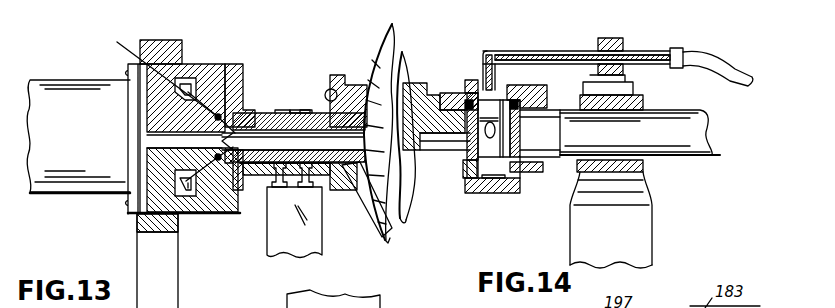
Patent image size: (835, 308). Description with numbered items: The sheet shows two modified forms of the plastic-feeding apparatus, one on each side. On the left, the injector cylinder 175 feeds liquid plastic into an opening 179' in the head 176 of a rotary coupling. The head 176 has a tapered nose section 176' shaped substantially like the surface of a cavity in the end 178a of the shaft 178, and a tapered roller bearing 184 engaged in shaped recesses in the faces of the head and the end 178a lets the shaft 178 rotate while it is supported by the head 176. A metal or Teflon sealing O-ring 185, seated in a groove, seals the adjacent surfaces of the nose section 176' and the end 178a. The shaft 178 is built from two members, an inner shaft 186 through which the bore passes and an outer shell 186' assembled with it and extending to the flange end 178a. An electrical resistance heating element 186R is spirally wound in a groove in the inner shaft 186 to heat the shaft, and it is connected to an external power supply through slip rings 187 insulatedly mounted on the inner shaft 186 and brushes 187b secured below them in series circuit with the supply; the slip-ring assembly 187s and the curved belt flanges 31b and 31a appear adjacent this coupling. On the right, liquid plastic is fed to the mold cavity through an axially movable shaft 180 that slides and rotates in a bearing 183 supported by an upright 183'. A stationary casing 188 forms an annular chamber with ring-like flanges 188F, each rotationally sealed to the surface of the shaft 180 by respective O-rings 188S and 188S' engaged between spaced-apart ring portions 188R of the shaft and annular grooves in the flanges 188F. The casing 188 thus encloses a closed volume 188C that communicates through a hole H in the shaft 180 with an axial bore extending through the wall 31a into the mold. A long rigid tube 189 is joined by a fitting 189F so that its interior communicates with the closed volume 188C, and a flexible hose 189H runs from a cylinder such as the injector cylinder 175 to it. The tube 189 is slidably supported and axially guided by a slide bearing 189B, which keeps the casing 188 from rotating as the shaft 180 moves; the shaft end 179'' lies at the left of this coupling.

In FIG. 13, the injector cylinder 175 is at (93, 127).
In FIG. 13, the head 176 is at (189, 115).
In FIG. 13, the tapered nose section 176' is at (154, 71).
In FIG. 13, the tapered roller bearing 184 is at (183, 78).
In FIG. 13, the end of shaft 178a is at (233, 107).
In FIG. 13, the sealing O-ring 185 is at (236, 113).
In FIG. 13, the opening 179' is at (276, 189).
In FIG. 13, the slip rings 187 is at (302, 107).
In FIG. 13, the shaft 178 is at (296, 108).
In FIG. 13, the outer shell 186' is at (280, 202).
In FIG. 13, the brushes 187b is at (313, 188).
In FIG. 13, the window plate 187s is at (270, 256).
In FIG. 13, the inner shaft 186 is at (344, 201).
In FIG. 13, the electrical resistance heating element 186R is at (362, 217).
In FIG. 13, the belt flange 31b is at (393, 26).
In FIG. 13, the wall 31a is at (404, 53).
In FIG. 14, the shaft end 179'' is at (446, 196).
In FIG. 14, the hole H is at (467, 81).
In FIG. 14, the stationary casing 188 is at (498, 193).
In FIG. 14, the O-ring 188S is at (455, 187).
In FIG. 14, the O-ring 188S' is at (540, 178).
In FIG. 14, the ring-like flanges 188F is at (520, 98).
In FIG. 14, the ring portions 188R is at (506, 130).
In FIG. 14, the closed volume 188C is at (492, 181).
In FIG. 14, the long rigid tube 189 is at (534, 51).
In FIG. 14, the fitting 189F is at (480, 53).
In FIG. 14, the slide bearing 189B is at (608, 40).
In FIG. 14, the flexible hose 189H is at (697, 54).
In FIG. 14, the axially movable shaft 180 is at (632, 149).
In FIG. 14, the bearing 183 is at (640, 174).
In FIG. 14, the upright 183' is at (635, 220).